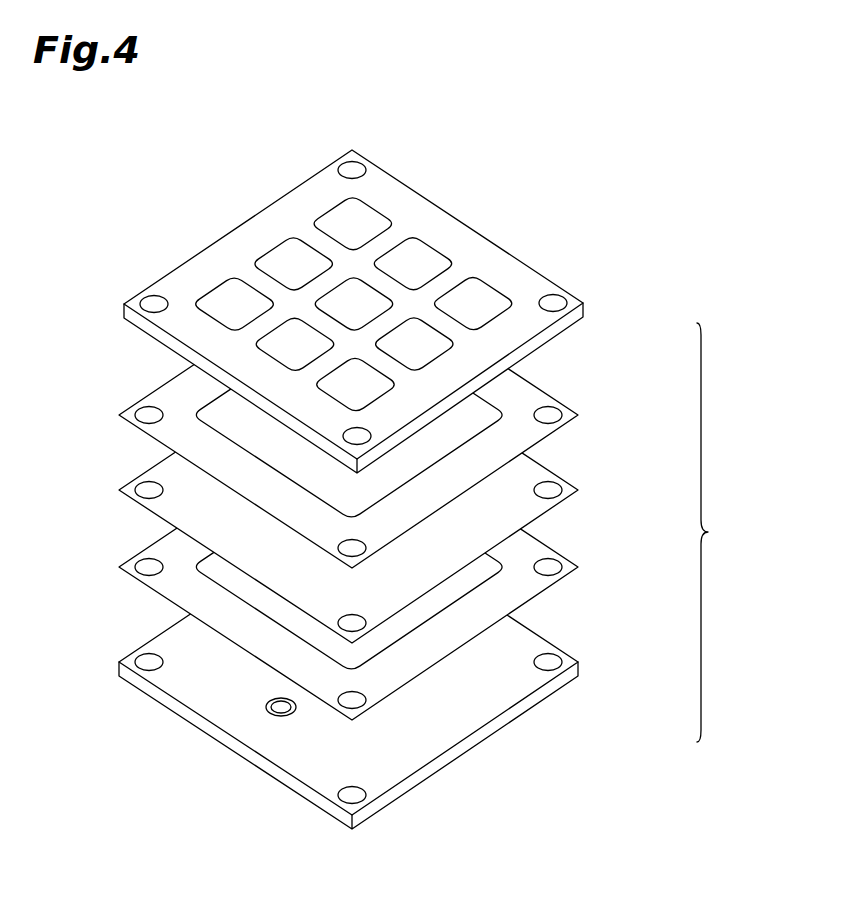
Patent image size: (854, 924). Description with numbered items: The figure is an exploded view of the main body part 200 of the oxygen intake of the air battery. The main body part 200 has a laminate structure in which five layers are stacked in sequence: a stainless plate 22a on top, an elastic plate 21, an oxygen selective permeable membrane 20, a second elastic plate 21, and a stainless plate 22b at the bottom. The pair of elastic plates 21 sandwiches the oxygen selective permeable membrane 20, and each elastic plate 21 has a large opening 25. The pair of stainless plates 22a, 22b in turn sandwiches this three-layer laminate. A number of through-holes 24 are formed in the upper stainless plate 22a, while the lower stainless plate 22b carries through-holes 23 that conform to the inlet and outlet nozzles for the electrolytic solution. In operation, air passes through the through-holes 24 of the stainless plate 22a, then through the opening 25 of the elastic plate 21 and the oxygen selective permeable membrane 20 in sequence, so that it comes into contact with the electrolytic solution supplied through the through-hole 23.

The main body part 200 is at (729, 532).
The stainless plate 22a is at (407, 295).
The stainless plate 22b is at (507, 688).
The elastic plate 21 is at (397, 542).
The oxygen selective permeable membrane 20 is at (527, 511).
The through-hole 23 is at (278, 710).
The through-hole 24 is at (338, 207).
The opening 25 is at (481, 430).